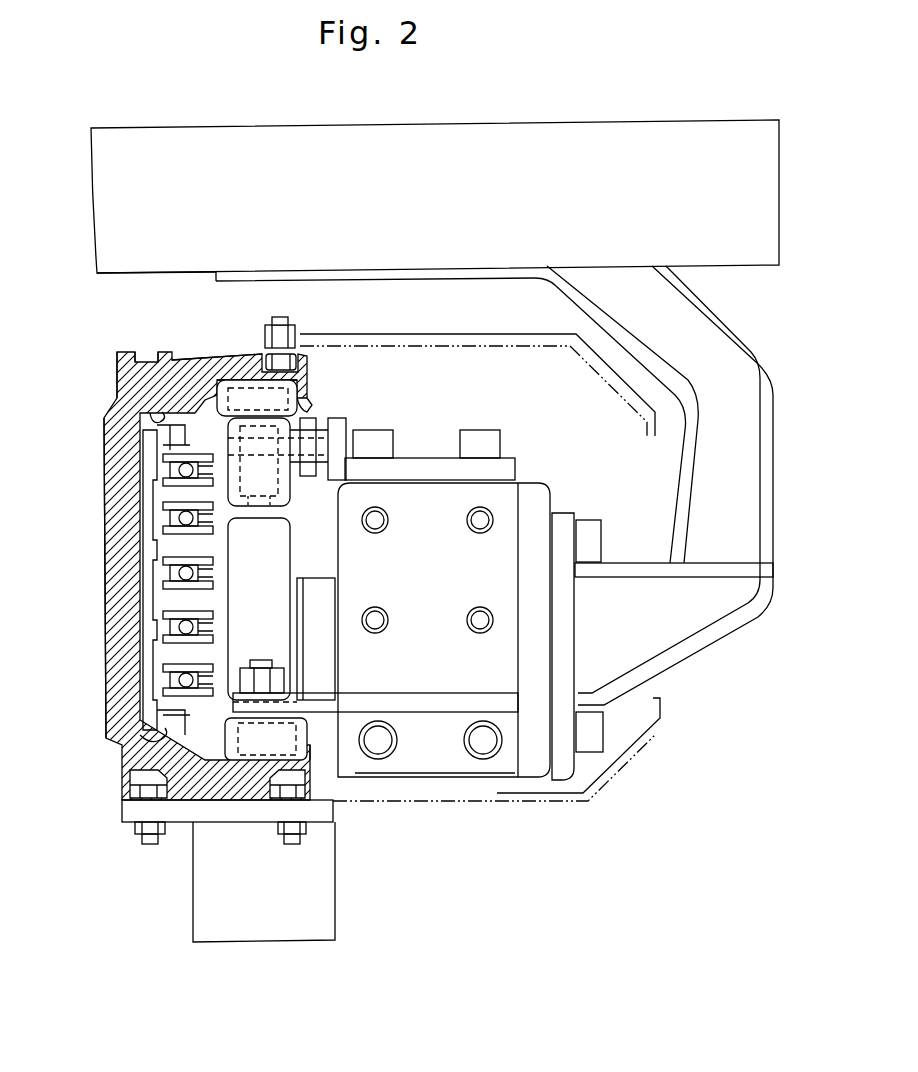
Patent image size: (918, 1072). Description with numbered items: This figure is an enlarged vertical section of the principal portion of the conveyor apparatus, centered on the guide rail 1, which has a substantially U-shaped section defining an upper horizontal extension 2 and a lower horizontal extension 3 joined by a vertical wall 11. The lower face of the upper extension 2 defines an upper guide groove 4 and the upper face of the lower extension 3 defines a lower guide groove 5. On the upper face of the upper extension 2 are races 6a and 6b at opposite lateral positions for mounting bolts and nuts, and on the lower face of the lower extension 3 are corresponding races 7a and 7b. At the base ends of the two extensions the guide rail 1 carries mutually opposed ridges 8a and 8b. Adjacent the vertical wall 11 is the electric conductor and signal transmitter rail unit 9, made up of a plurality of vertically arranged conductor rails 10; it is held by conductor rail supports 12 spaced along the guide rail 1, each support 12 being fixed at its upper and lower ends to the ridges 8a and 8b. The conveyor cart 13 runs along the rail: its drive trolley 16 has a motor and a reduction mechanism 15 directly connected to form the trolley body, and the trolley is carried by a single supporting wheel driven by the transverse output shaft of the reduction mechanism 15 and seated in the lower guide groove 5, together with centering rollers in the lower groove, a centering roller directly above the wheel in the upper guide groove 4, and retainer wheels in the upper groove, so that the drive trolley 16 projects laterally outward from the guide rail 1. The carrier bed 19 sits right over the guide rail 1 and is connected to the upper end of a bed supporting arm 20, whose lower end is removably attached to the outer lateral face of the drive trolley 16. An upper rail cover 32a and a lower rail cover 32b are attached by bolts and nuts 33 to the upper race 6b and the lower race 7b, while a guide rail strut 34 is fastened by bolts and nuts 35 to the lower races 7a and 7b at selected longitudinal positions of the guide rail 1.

The guide rail 1 is at (117, 634).
The upper horizontal extension 2 is at (232, 377).
The lower horizontal extension 3 is at (227, 778).
The upper guide groove 4 is at (304, 403).
The lower guide groove 5 is at (305, 757).
The upper race 6a is at (136, 366).
The upper race 6b is at (298, 368).
The lower race 7a is at (132, 776).
The lower race 7b is at (300, 796).
The upper ridge 8a is at (152, 416).
The lower ridge 8b is at (124, 744).
The electric conductor and signal transmitter rail unit 9 is at (220, 573).
The conductor rails 10 is at (172, 560).
The vertical wall 11 is at (126, 576).
The conductor rail support 12 is at (160, 602).
The conveyor cart 13 is at (591, 119).
The reduction mechanism 15 is at (488, 562).
The drive trolley 16 is at (527, 498).
The carrier bed 19 is at (262, 146).
The bed supporting arm 20 is at (712, 356).
The upper rail cover 32a is at (456, 332).
The lower rail cover 32b is at (468, 803).
The bolts and nuts 33 is at (279, 316).
The guide rail strut 34 is at (250, 912).
The bolts and nuts 35 is at (150, 842).